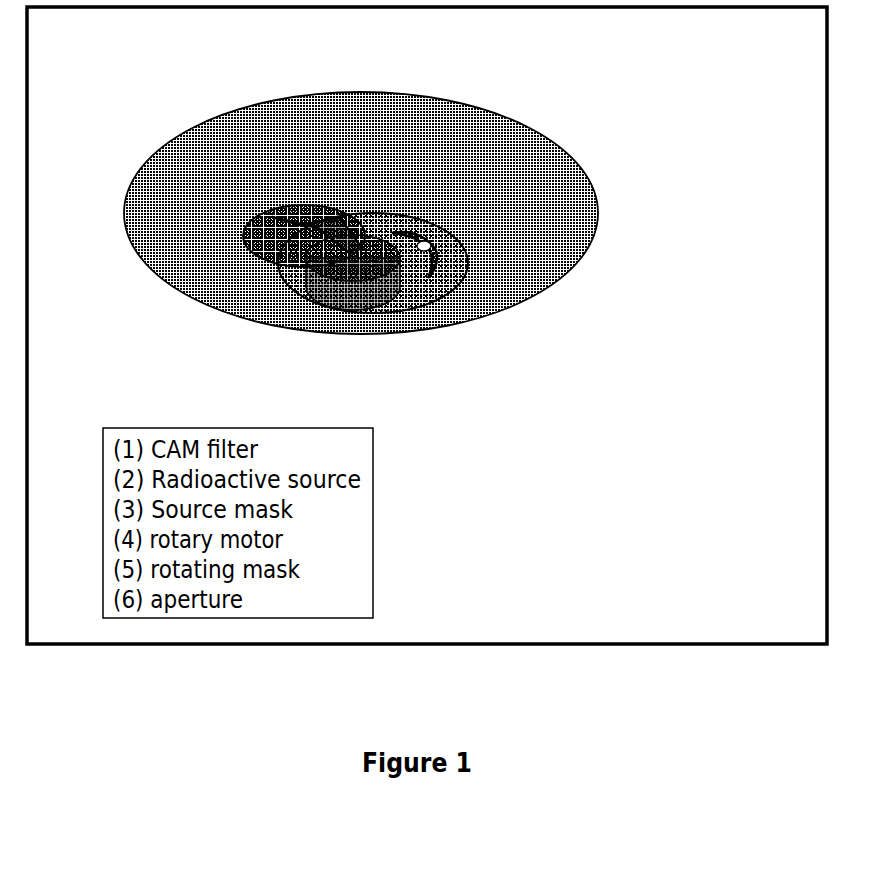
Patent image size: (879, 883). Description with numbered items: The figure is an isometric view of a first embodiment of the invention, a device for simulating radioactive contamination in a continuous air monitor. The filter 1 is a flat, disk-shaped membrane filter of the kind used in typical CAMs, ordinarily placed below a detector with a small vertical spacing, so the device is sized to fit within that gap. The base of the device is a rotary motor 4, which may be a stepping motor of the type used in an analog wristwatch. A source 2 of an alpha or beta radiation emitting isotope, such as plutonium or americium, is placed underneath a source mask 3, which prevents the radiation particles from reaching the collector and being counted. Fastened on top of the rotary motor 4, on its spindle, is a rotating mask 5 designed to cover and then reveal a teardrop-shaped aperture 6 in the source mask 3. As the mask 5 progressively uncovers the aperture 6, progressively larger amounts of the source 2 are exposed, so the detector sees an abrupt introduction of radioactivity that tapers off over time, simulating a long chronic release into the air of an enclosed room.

The filter 1 is at (332, 103).
The source 2 is at (425, 242).
The source mask 3 is at (412, 312).
The rotary motor 4 is at (320, 307).
The mask 5 is at (243, 250).
The aperture 6 is at (433, 268).